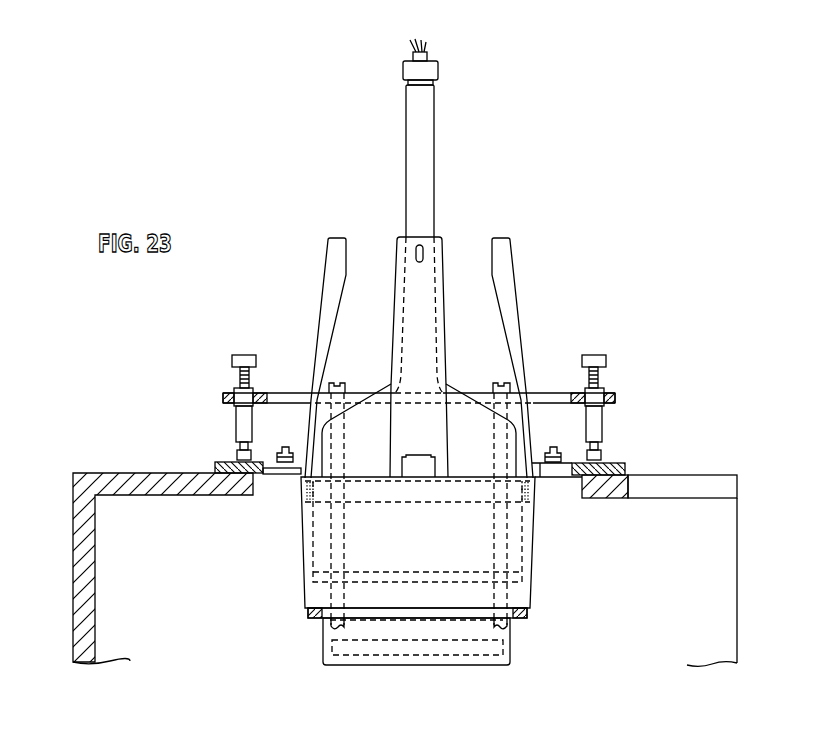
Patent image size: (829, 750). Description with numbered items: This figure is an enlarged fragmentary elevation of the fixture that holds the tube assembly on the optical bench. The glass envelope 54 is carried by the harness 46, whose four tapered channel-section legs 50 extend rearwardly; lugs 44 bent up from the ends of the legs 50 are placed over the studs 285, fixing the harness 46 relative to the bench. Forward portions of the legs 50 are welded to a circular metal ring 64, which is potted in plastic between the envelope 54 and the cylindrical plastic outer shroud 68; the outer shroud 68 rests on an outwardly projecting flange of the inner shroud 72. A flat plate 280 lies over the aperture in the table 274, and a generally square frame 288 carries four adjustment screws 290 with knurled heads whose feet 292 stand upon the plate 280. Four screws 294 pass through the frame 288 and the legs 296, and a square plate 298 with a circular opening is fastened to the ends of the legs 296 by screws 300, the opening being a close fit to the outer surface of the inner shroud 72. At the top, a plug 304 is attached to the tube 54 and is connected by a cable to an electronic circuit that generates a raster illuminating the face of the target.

The plug 304 is at (438, 72).
The harness 46 is at (535, 257).
The tapered channel-section legs 50 is at (514, 300).
The glass envelope 54 is at (448, 382).
The screws 294 is at (502, 382).
The lugs 44 is at (540, 455).
The adjustment screws 290 is at (598, 355).
The frame 288 is at (607, 393).
The studs 285 is at (561, 448).
The flat plate 280 is at (612, 463).
The table 274 is at (138, 473).
The feet 292 is at (237, 455).
The circular metal ring 64 is at (315, 490).
The cylindrical plastic outer shroud 68 is at (538, 516).
The legs 296 is at (493, 542).
The plate 298 is at (310, 613).
The screws 300 is at (490, 623).
The inner shroud 72 is at (512, 635).